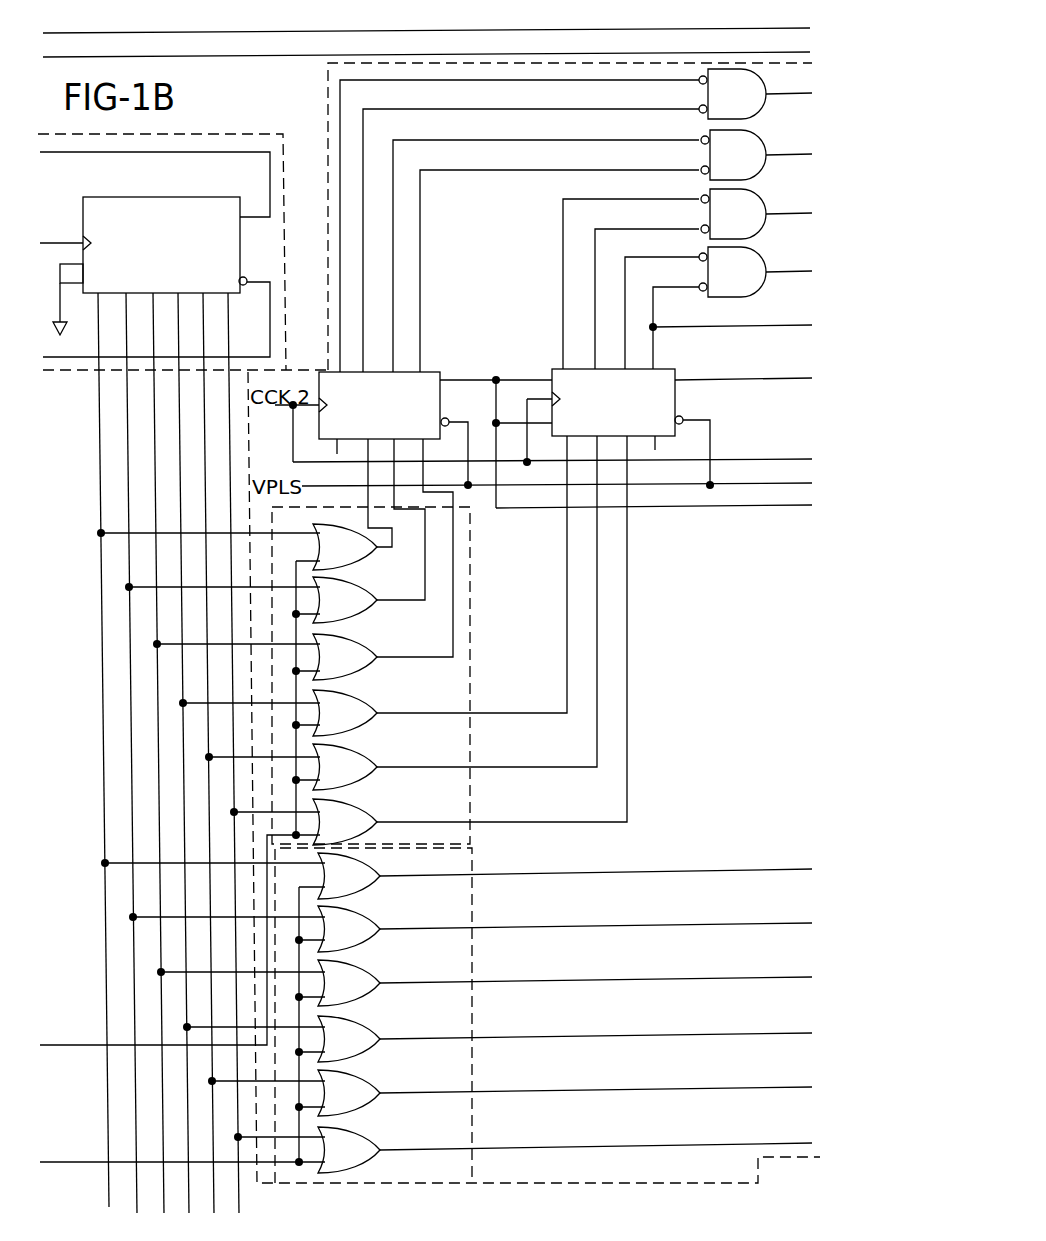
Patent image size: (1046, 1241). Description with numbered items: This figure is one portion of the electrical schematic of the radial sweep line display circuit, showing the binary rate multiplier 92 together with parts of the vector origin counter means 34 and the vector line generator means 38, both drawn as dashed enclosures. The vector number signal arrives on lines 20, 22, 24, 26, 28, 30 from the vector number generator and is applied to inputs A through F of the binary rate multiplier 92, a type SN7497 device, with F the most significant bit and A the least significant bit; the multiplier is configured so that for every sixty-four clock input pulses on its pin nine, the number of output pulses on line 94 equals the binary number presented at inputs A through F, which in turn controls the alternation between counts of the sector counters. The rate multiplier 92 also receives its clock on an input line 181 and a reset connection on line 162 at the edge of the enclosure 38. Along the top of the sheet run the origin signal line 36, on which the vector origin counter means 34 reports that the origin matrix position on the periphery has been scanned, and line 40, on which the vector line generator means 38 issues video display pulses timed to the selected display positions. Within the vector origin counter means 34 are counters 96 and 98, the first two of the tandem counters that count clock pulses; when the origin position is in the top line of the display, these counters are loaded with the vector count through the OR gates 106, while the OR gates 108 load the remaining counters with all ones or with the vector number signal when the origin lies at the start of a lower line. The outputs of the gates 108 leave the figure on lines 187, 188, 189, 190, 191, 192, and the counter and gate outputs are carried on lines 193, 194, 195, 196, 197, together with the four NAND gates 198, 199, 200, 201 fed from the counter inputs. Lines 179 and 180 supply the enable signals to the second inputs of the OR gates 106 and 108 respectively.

The line 36 is at (93, 33).
The line 40 is at (93, 57).
The vector origin counter means 34 is at (328, 100).
The vector line generator means 38 is at (286, 175).
The binary rate multiplier 92 is at (165, 197).
The line 94 is at (178, 152).
The clock input line 181 is at (50, 243).
The reset line 162 is at (54, 372).
The counter 96 is at (432, 372).
The counter 98 is at (556, 369).
The NAND gate 201 is at (768, 96).
The NAND gate 200 is at (770, 160).
The NAND gate 199 is at (770, 218).
The NAND gate 198 is at (770, 276).
The output line 197 is at (738, 330).
The output line 196 is at (728, 382).
The output line 195 is at (733, 462).
The output line 194 is at (715, 488).
The output line 193 is at (700, 510).
The gates 106 is at (470, 665).
The gates 108 is at (470, 924).
The output line 192 is at (726, 870).
The output line 191 is at (786, 923).
The output line 190 is at (788, 977).
The output line 189 is at (789, 1033).
The output line 188 is at (728, 1088).
The output line 187 is at (738, 1143).
The line 30 is at (235, 962).
The line 28 is at (211, 1013).
The line 26 is at (189, 1100).
The line 24 is at (164, 1130).
The line 22 is at (137, 1183).
The line 20 is at (110, 1205).
The input line 179 is at (90, 1045).
The input line 180 is at (92, 1162).